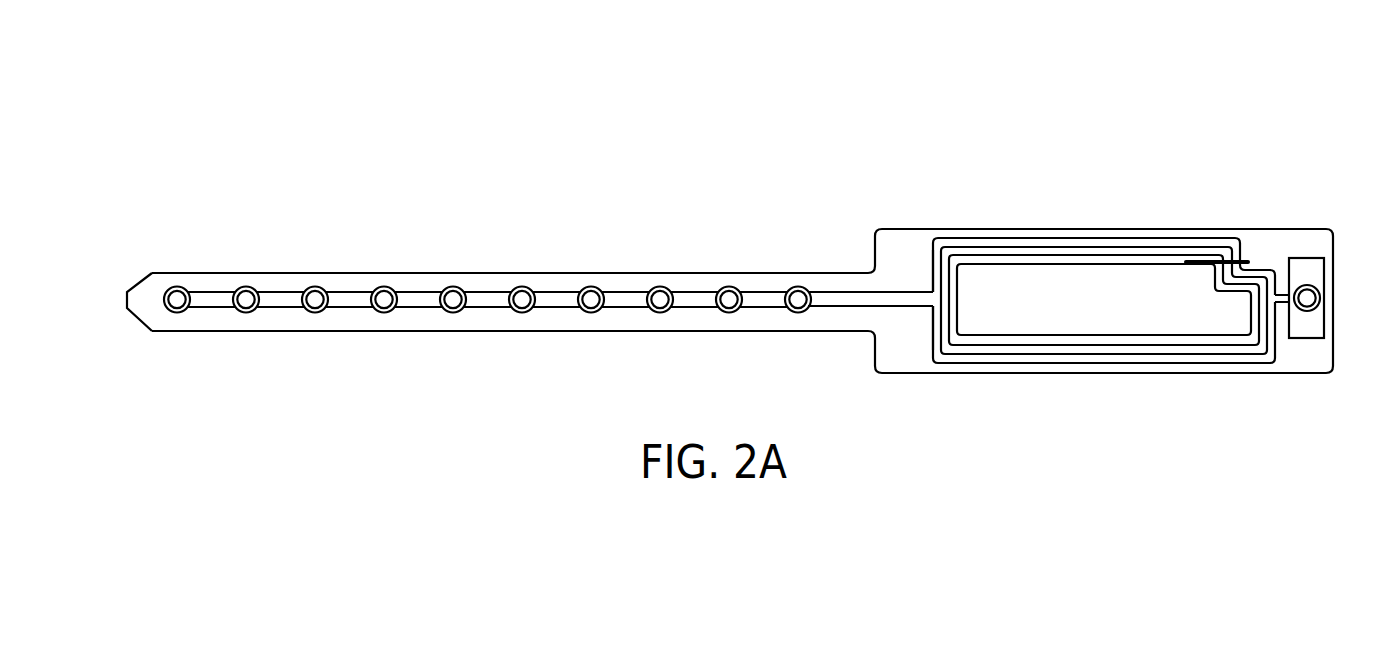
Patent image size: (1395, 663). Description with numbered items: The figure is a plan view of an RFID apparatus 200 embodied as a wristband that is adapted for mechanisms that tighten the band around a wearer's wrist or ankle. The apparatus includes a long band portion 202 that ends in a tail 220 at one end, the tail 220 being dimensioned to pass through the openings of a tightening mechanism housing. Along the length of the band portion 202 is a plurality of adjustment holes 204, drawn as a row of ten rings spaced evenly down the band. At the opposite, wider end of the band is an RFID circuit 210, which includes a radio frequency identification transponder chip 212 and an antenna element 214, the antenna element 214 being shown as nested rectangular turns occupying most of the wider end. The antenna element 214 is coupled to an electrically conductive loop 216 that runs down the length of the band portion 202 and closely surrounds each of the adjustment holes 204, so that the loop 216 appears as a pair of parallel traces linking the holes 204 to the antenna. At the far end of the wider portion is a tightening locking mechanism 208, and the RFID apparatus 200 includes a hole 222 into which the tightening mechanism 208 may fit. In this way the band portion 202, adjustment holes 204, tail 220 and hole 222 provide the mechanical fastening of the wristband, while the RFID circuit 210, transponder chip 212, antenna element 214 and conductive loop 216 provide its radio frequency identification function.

The RFID apparatus 200 is at (866, 108).
The band portion 202 is at (414, 272).
The adjustment holes 204 is at (238, 311).
The tightening locking mechanism 208 is at (1305, 257).
The RFID circuit 210 is at (1046, 236).
The RFID transponder chip 212 is at (1203, 266).
The antenna element 214 is at (936, 238).
The electrically conductive loop 216 is at (697, 291).
The tail 220 is at (127, 299).
The hole 222 is at (1310, 298).